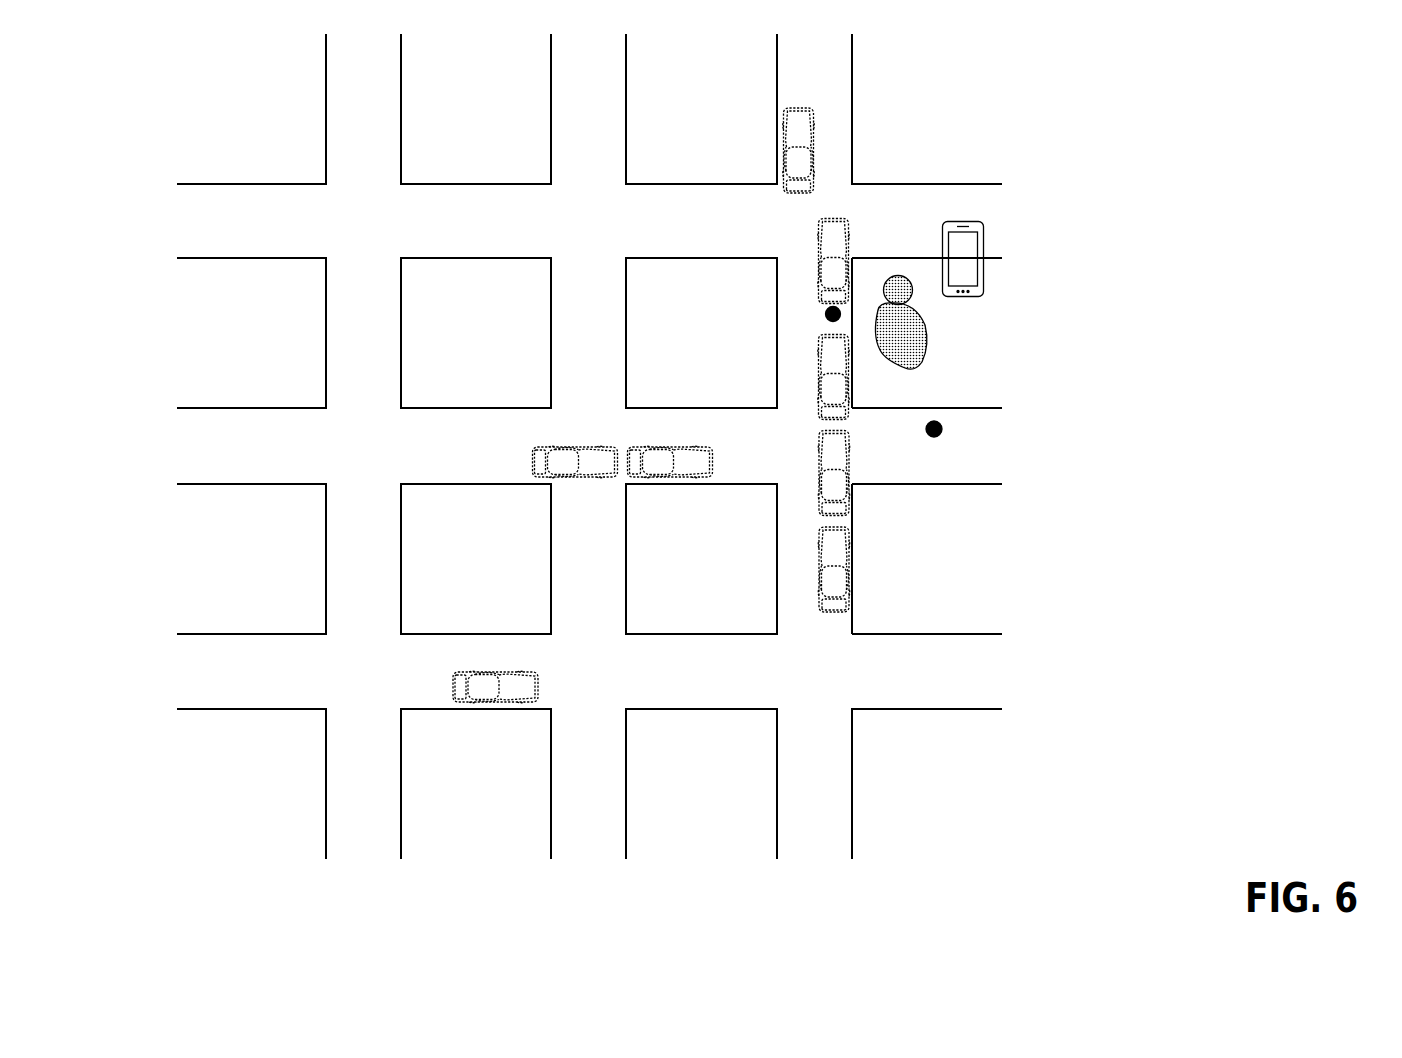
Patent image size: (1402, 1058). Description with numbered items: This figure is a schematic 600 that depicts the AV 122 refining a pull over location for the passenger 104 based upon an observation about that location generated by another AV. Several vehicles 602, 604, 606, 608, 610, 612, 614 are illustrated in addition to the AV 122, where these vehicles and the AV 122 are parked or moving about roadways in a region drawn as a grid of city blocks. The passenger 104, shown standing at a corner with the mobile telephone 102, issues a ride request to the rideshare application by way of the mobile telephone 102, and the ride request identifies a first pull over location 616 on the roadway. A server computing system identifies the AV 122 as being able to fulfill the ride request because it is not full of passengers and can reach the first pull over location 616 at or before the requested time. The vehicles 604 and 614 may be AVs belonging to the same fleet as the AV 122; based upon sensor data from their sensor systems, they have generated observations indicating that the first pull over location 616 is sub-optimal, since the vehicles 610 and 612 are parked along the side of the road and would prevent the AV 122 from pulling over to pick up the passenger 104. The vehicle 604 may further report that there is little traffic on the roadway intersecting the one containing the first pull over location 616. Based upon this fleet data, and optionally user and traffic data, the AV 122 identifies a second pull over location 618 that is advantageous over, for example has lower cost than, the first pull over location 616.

The schematic 600 is at (1133, 147).
The vehicle 602 is at (553, 448).
The vehicle 604 is at (670, 448).
The vehicle 606 is at (851, 580).
The vehicle 608 is at (850, 465).
The vehicle 610 is at (815, 372).
The vehicle 612 is at (816, 241).
The vehicle 614 is at (813, 147).
The first pull over location 616 is at (826, 308).
The second pull over location 618 is at (940, 435).
The AV 122 is at (530, 672).
The mobile telephone 102 is at (985, 240).
The passenger 104 is at (925, 352).